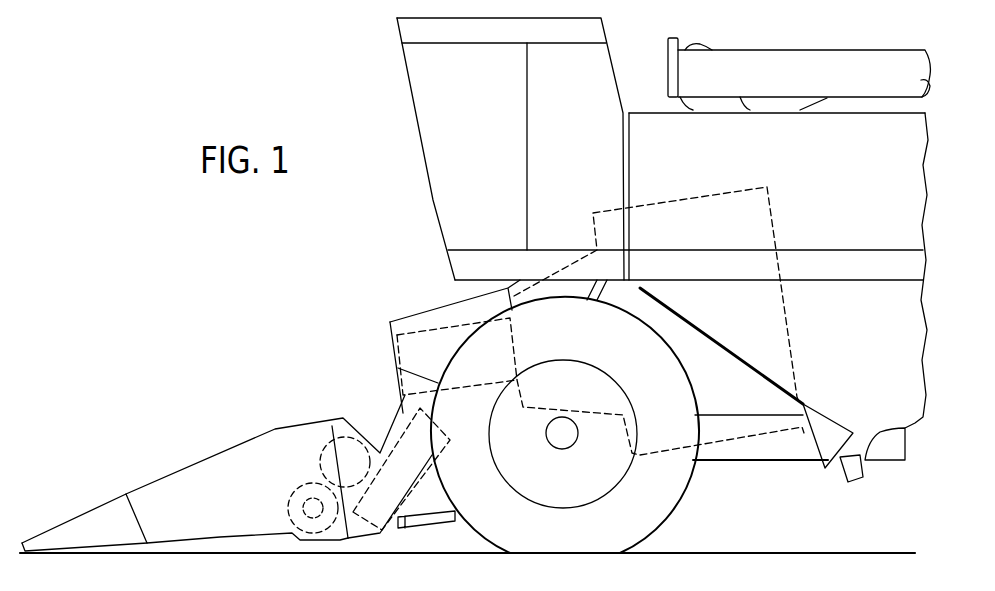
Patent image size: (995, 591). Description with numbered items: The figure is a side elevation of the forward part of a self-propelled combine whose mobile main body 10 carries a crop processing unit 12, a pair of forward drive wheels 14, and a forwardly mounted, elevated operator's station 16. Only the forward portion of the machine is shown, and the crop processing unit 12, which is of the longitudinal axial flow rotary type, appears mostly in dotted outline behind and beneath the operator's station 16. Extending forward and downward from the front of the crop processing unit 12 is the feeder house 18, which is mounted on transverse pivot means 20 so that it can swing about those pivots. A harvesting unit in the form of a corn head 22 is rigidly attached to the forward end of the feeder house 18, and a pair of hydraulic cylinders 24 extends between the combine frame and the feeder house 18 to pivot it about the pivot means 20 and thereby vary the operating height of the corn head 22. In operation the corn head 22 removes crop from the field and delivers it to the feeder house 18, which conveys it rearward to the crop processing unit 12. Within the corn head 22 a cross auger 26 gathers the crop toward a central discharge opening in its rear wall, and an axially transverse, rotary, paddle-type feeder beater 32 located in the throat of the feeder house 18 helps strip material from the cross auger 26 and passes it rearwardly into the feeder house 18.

The mobile main body 10 is at (780, 468).
The crop processing unit 12 is at (446, 313).
The forward drive wheels 14 is at (679, 492).
The operator's station 16 is at (417, 122).
The feeder house 18 is at (377, 438).
The transverse pivot means 20 is at (406, 412).
The corn head 22 is at (171, 486).
The hydraulic cylinders 24 is at (423, 524).
The cross auger 26 is at (290, 495).
The feeder beater 32 is at (322, 450).